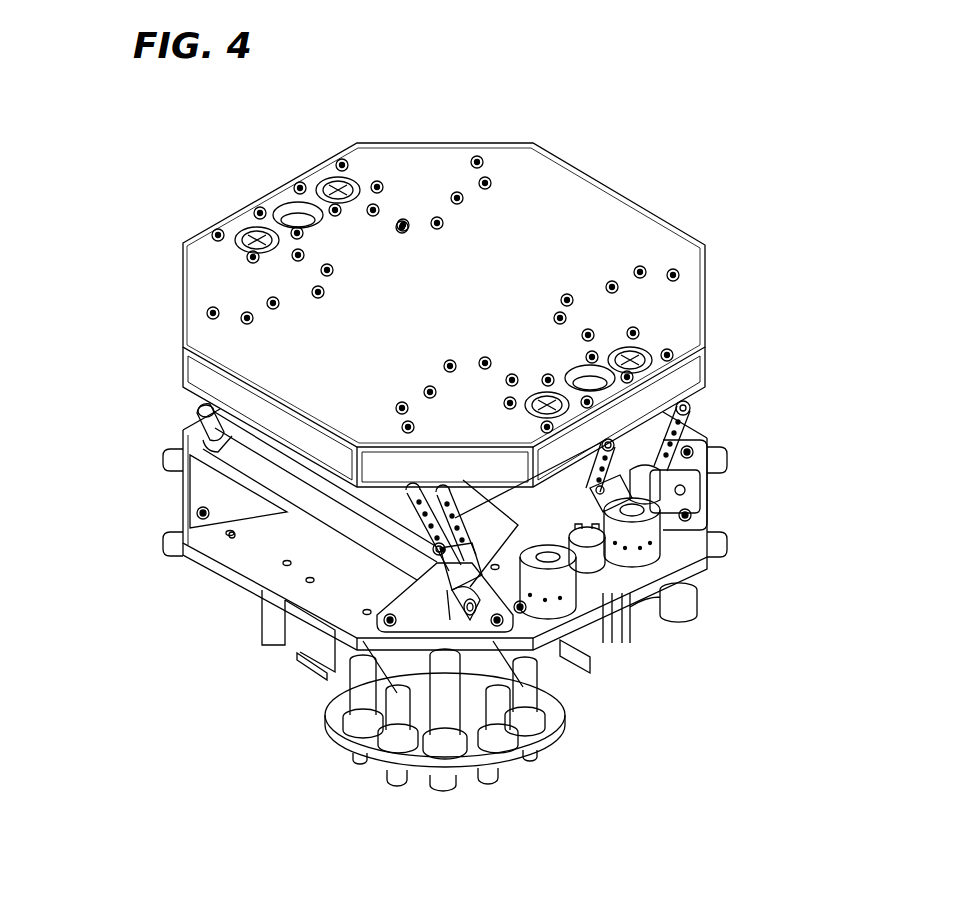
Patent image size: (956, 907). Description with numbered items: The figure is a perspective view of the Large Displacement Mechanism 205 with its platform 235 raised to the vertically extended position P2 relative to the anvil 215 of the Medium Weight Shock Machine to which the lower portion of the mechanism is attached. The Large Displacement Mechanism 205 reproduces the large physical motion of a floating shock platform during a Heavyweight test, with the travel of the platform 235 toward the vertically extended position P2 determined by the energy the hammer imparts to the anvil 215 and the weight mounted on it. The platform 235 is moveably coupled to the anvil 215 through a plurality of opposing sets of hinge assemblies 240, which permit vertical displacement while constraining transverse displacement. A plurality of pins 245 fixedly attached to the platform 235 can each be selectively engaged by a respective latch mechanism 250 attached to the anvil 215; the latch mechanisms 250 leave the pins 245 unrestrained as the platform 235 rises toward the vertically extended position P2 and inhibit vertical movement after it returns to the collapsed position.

The vertically extended position P2 is at (614, 160).
The Large Displacement Mechanism 205 is at (165, 527).
The anvil 215 is at (160, 750).
The platform 235 is at (372, 163).
The hinge assemblies 240 is at (402, 560).
The pins 245 is at (640, 435).
The latch mechanisms 250 is at (637, 512).